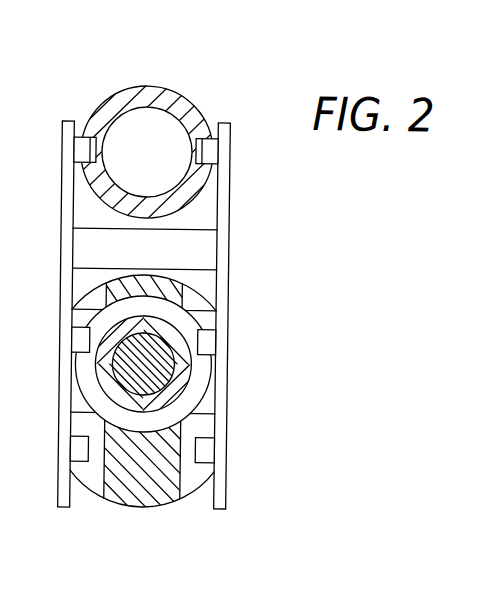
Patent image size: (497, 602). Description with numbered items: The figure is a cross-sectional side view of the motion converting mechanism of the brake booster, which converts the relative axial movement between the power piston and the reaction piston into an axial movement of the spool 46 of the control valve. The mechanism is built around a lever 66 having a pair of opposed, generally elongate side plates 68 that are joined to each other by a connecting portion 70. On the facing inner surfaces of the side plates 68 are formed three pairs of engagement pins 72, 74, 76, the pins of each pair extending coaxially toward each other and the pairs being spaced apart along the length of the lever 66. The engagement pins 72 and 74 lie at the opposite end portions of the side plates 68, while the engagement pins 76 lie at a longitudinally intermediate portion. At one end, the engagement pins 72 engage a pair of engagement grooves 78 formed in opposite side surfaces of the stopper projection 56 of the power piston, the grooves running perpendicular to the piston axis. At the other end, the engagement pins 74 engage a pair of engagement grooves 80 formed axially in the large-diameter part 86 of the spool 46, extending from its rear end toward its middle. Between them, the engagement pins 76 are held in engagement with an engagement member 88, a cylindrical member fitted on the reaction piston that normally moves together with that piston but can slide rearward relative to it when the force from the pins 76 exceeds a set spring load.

The spool 46 is at (165, 77).
The large-diameter part 86 is at (188, 110).
The engagement pins 74 is at (147, 165).
The engagement grooves 80 is at (78, 155).
The lever 66 is at (188, 393).
The connecting portion 70 is at (207, 250).
The side plates 68 is at (60, 280).
The engagement pins 76 is at (78, 343).
The engagement member 88 is at (182, 365).
The engagement pins 72 is at (77, 448).
The engagement grooves 78 is at (103, 475).
The stopper projection 56 is at (140, 487).